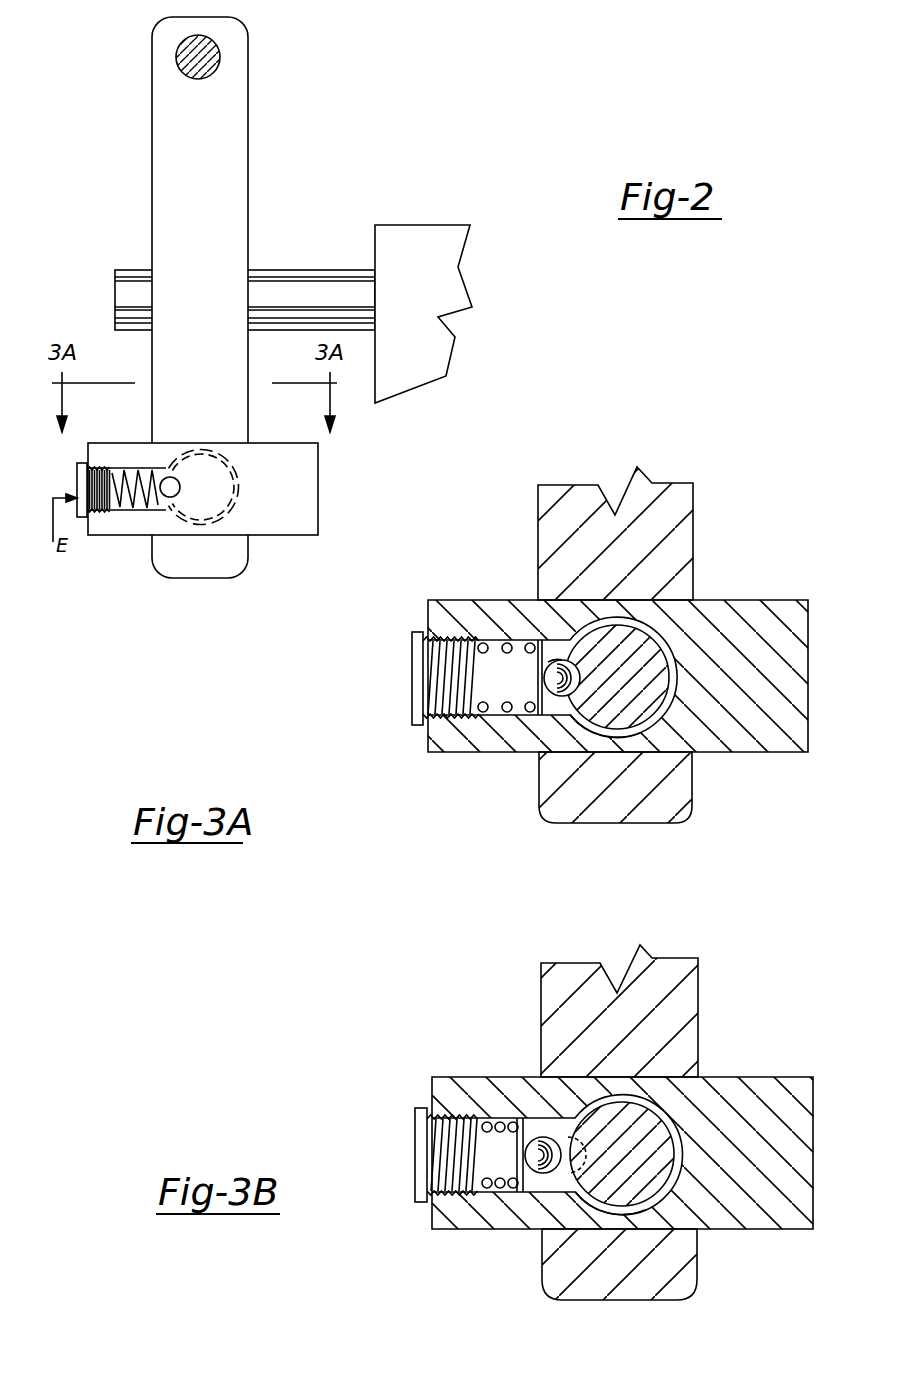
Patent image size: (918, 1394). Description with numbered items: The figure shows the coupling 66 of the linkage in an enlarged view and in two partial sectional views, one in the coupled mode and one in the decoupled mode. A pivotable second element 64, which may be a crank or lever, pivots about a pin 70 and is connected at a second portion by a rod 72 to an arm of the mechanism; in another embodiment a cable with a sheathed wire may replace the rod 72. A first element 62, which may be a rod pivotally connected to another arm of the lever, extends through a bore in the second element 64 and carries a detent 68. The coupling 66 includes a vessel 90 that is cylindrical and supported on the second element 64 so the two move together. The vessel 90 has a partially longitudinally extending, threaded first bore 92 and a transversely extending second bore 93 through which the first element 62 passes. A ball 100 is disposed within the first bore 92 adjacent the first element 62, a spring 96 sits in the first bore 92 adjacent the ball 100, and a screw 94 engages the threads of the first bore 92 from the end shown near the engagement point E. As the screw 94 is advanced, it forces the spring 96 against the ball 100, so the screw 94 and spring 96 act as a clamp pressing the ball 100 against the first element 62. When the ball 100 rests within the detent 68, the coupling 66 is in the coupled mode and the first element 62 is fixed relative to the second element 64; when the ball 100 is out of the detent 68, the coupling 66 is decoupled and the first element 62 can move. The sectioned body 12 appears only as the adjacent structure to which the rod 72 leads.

In FIG. 2, the tool head / mounting body 12 is at (419, 288).
In FIG. 3A, the first element 62 is at (638, 652).
In FIG. 3B, the first element 62 is at (645, 1130).
In FIG. 2, the second element 64 is at (211, 178).
In FIG. 3A, the second element 64 is at (630, 497).
In FIG. 3B, the second element 64 is at (633, 975).
In FIG. 2, the coupling 66 is at (261, 545).
In FIG. 3A, the coupling 66 is at (708, 755).
In FIG. 3B, the coupling 66 is at (711, 1233).
In FIG. 3A, the detent 68 is at (556, 660).
In FIG. 3B, the detent 68 is at (568, 1137).
In FIG. 2, the pin 70 is at (298, 280).
In FIG. 2, the rod 72 is at (217, 55).
In FIG. 2, the vessel 90 is at (302, 488).
In FIG. 3A, the vessel 90 is at (745, 600).
In FIG. 3B, the vessel 90 is at (748, 1077).
In FIG. 2, the first bore 92 is at (166, 480).
In FIG. 3A, the first bore 92 is at (428, 652).
In FIG. 3B, the first bore 92 is at (430, 1130).
In FIG. 2, the second bore 93 is at (195, 510).
In FIG. 3A, the second bore 93 is at (615, 737).
In FIG. 3B, the second bore 93 is at (620, 1214).
In FIG. 2, the screw 94 is at (77, 487).
In FIG. 3A, the screw 94 is at (416, 698).
In FIG. 3B, the screw 94 is at (420, 1178).
In FIG. 2, the spring 96 is at (134, 508).
In FIG. 3A, the spring 96 is at (505, 716).
In FIG. 3B, the spring 96 is at (517, 1231).
In FIG. 3A, the ball 100 is at (553, 666).
In FIG. 3B, the ball 100 is at (541, 1137).